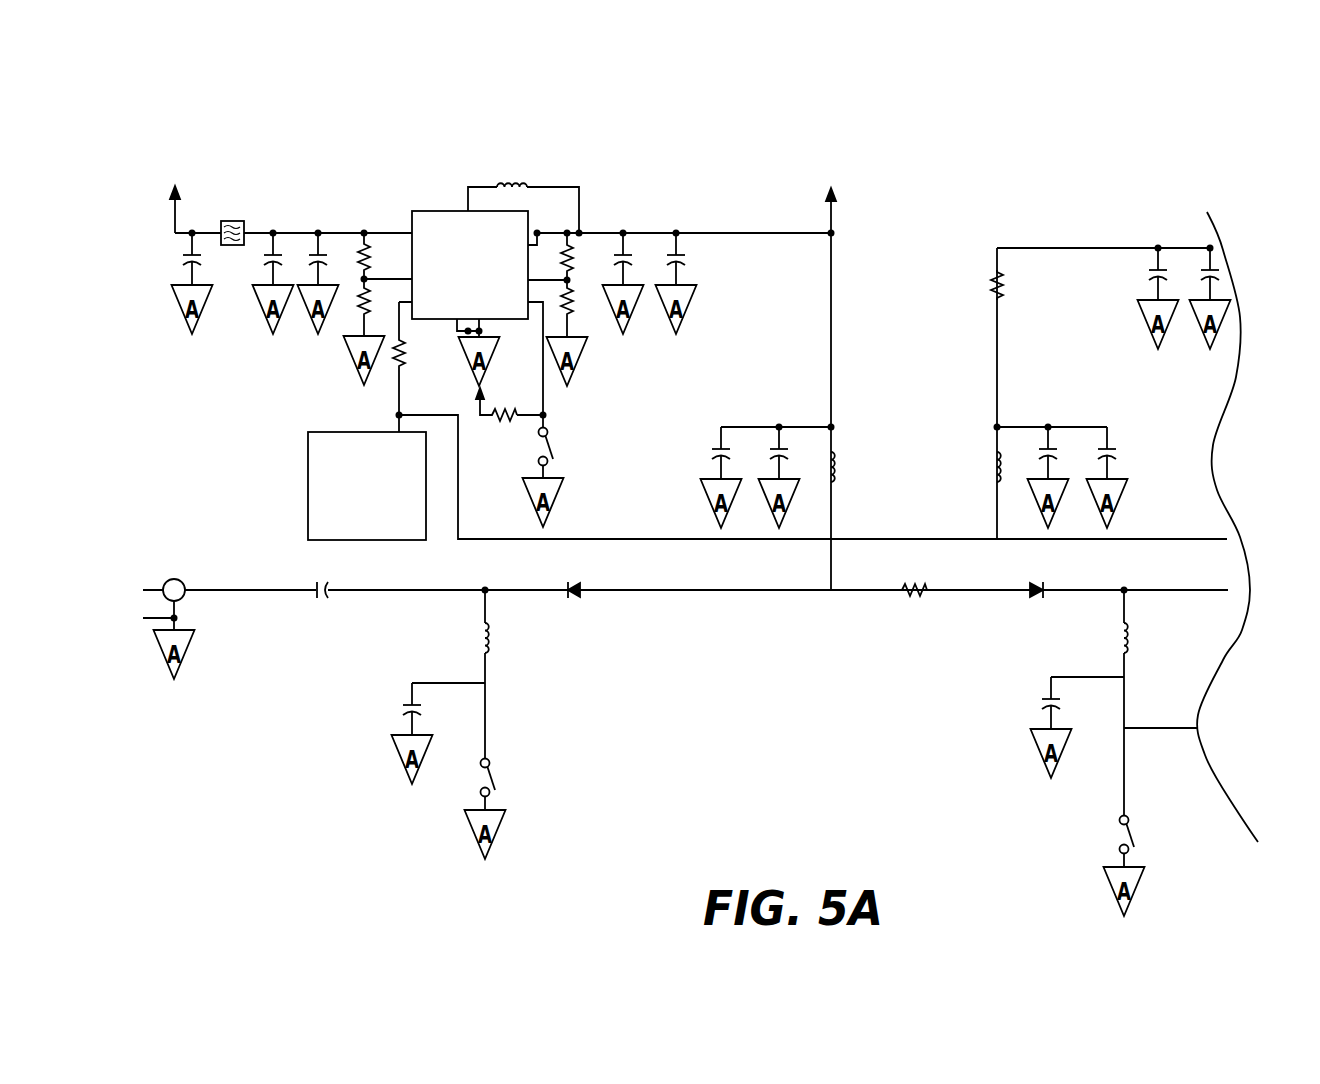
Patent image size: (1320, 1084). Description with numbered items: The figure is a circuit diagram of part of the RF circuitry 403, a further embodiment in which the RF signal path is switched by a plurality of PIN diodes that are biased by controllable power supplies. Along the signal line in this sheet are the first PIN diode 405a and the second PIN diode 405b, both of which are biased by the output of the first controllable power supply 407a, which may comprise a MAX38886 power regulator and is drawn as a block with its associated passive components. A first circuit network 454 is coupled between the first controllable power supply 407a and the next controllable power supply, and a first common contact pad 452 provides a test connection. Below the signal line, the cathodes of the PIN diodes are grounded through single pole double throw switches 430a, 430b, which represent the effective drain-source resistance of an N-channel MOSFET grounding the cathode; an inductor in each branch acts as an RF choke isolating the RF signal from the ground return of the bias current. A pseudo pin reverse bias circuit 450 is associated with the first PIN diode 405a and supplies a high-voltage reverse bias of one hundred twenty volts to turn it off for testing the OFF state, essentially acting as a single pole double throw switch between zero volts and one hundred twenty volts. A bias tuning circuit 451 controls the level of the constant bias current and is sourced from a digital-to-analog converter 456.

The RF circuitry 403 is at (1140, 123).
The first circuit network 454 is at (960, 190).
The first common contact pad 452 is at (952, 256).
The first controllable power supply 407a is at (432, 222).
The bias tuning circuit 451 is at (270, 455).
The digital-to-analog converter 456 is at (308, 486).
The pseudo pin reverse bias circuit 450 is at (367, 770).
The single pole double throw switch 430a is at (507, 692).
The single pole double throw switch 430b is at (1110, 720).
The first PIN diode 405a is at (576, 601).
The second PIN diode 405b is at (1036, 601).